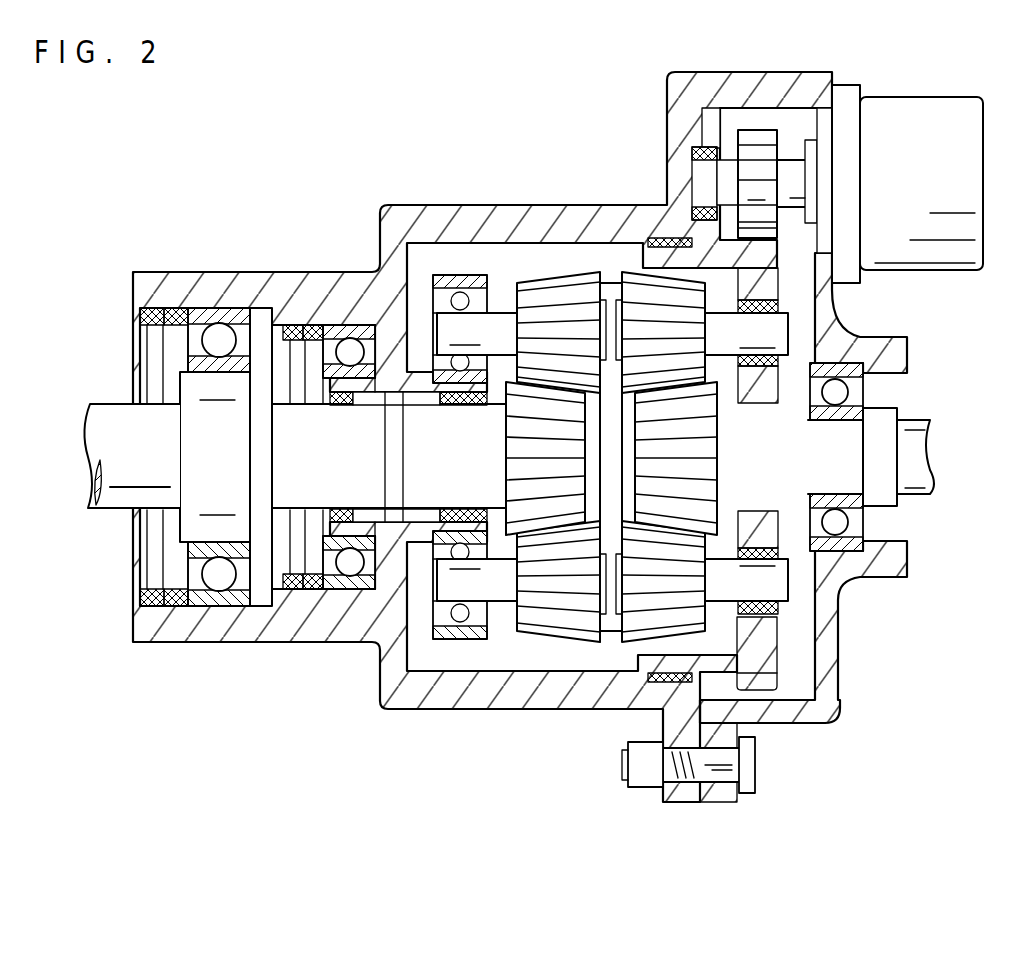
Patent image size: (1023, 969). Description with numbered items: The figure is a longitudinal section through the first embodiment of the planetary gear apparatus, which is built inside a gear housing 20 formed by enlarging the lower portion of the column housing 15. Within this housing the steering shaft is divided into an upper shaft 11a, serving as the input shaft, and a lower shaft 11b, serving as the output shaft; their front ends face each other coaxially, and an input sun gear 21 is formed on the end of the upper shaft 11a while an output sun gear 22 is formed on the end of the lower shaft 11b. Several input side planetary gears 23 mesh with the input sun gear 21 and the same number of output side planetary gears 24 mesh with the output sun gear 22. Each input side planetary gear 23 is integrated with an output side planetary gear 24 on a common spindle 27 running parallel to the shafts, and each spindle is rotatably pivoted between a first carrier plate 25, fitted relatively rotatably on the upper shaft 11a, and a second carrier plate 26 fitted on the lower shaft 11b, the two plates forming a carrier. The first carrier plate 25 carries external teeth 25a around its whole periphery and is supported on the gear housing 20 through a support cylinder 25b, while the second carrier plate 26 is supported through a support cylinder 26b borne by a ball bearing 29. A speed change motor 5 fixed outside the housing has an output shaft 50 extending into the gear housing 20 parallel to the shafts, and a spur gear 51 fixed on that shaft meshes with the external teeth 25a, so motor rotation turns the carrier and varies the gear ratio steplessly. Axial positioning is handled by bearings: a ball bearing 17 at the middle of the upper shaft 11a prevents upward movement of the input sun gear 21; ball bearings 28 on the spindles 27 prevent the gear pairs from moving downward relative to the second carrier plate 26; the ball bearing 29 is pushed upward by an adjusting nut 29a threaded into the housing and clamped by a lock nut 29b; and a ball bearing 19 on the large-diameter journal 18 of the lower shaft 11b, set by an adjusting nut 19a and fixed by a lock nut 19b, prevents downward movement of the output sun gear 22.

The speed change motor 5 is at (930, 105).
The upper shaft 11a is at (970, 406).
The lower shaft 11b is at (105, 412).
The column housing 15 is at (915, 352).
The ball bearing 17 is at (905, 530).
The journal 18 is at (185, 520).
The ball bearing 19 is at (232, 308).
The adjusting nut 19a is at (178, 606).
The lock nut 19b is at (150, 606).
The gear housing 20 is at (648, 243).
The input sun gear 21 is at (700, 468).
The output sun gear 22 is at (515, 470).
The input side planetary gear 23 is at (598, 178).
The output side planetary gear 24 is at (540, 172).
The first carrier plate 25 is at (780, 642).
The external teeth 25a is at (762, 688).
The support cylinder 25b is at (658, 770).
The second carrier plate 26 is at (420, 542).
The support cylinder 26b is at (392, 650).
The spindle 27 is at (875, 308).
The ball bearing 28 is at (435, 180).
The ball bearing 29 is at (355, 328).
The adjusting nut 29a is at (320, 592).
The lock nut 29b is at (292, 590).
The output shaft 50 is at (800, 170).
The spur gear 51 is at (755, 130).